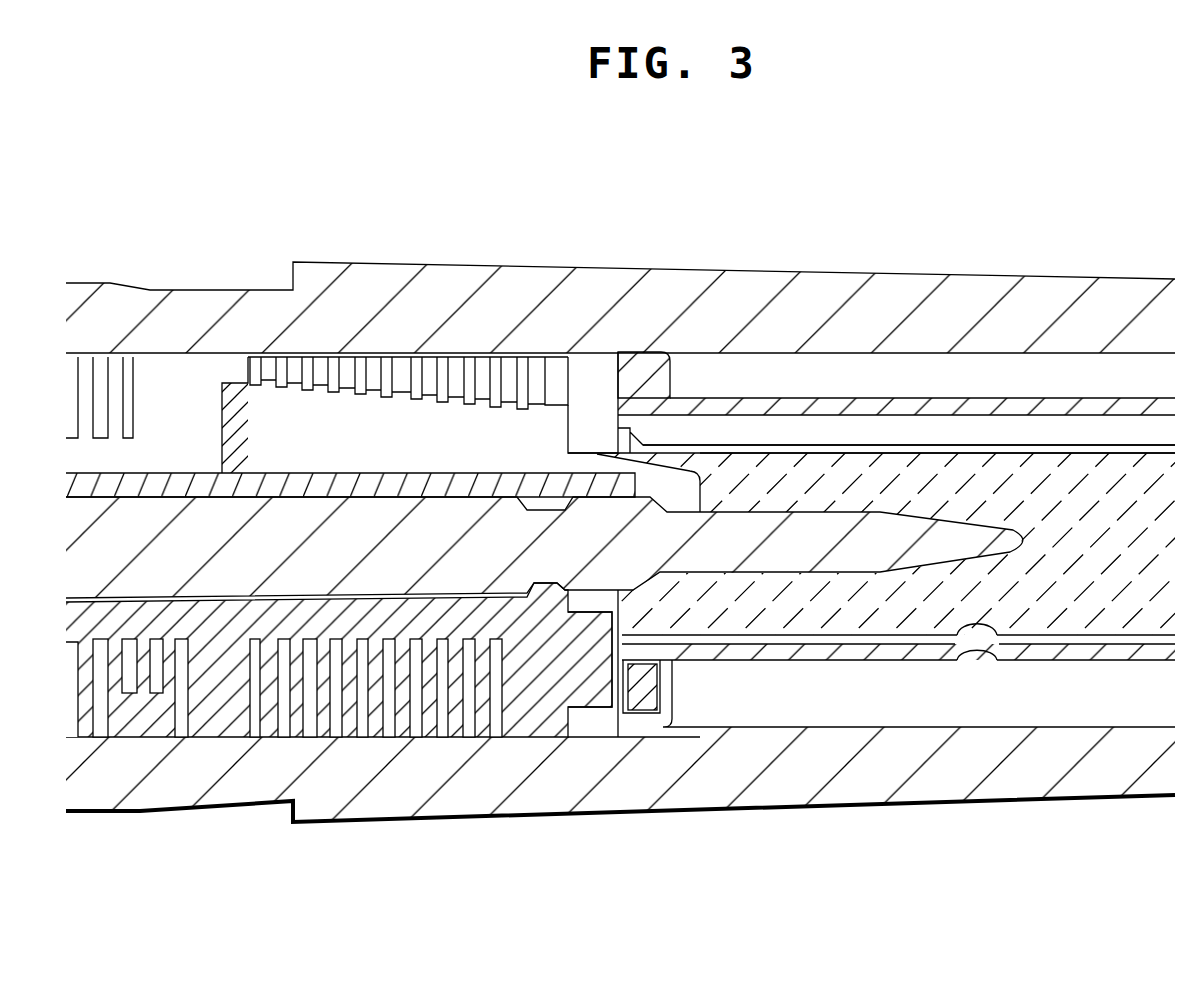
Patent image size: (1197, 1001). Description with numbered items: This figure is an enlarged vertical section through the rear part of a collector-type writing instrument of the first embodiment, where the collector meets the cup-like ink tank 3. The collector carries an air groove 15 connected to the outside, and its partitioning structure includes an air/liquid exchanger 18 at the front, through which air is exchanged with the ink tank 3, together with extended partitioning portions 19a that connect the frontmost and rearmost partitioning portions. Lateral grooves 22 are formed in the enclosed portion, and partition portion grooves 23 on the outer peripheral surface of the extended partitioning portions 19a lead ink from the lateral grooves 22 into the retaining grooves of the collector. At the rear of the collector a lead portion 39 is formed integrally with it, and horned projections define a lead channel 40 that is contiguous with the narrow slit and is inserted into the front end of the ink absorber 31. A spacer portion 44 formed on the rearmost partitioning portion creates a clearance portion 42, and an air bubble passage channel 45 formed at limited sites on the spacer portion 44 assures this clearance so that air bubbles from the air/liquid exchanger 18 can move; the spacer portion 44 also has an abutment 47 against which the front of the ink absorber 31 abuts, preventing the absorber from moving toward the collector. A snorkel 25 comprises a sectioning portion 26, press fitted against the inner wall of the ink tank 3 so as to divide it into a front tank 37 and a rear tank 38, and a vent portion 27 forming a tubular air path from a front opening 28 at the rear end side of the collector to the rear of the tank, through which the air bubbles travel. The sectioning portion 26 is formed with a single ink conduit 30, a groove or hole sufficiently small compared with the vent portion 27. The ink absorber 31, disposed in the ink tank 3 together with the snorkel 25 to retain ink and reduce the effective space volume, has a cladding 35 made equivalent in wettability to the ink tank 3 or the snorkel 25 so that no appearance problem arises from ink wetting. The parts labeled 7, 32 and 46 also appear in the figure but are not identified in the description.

The ink tank 3 is at (823, 300).
The rotor 7 is at (372, 600).
The air groove 15 is at (170, 717).
The air/liquid exchanger 18 is at (234, 368).
The extended partitioning portions 19a is at (510, 364).
The lateral grooves 22 is at (336, 385).
The partition portion grooves 23 is at (419, 370).
The snorkel 25 is at (940, 648).
The sectioning portion 26 is at (702, 345).
The vent portion 27 is at (983, 433).
The front opening 28 is at (640, 367).
The ink conduit 30 is at (652, 718).
The ink absorber 31 is at (1092, 603).
The seal ring 32 is at (663, 722).
The cladding 35 is at (1078, 440).
The front tank 37 is at (626, 716).
The rear tank 38 is at (880, 698).
The lead portion 39 is at (717, 470).
The lead channel 40 is at (578, 462).
The clearance portion 42 is at (598, 423).
The spacer portion 44 is at (587, 700).
The air bubble passage channel 45 is at (610, 602).
The projection 46 is at (983, 662).
The abutment 47 is at (610, 627).